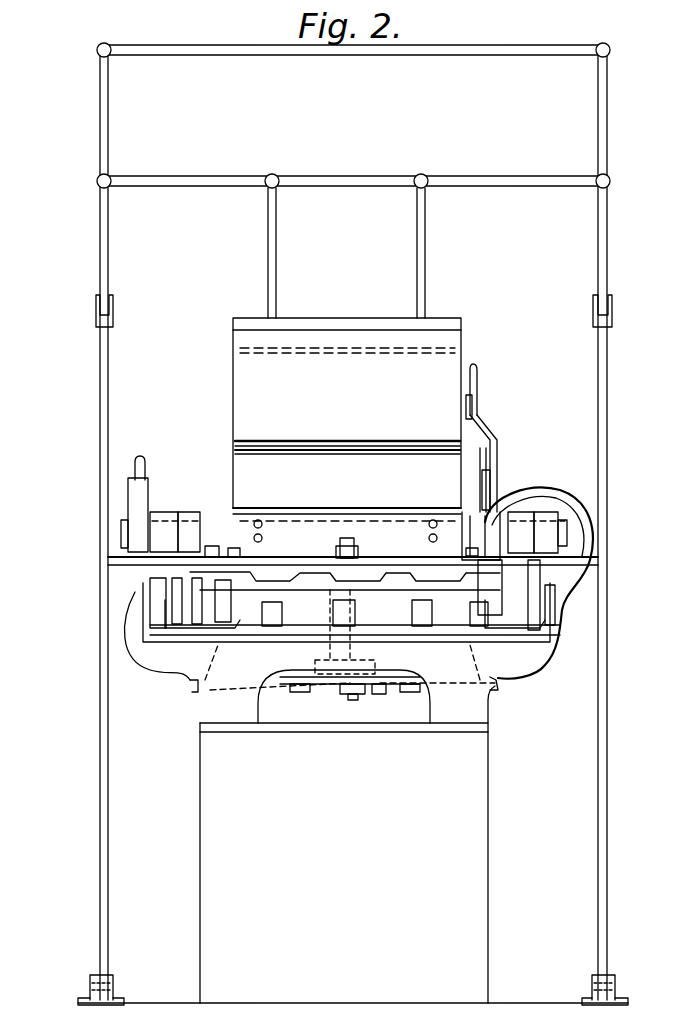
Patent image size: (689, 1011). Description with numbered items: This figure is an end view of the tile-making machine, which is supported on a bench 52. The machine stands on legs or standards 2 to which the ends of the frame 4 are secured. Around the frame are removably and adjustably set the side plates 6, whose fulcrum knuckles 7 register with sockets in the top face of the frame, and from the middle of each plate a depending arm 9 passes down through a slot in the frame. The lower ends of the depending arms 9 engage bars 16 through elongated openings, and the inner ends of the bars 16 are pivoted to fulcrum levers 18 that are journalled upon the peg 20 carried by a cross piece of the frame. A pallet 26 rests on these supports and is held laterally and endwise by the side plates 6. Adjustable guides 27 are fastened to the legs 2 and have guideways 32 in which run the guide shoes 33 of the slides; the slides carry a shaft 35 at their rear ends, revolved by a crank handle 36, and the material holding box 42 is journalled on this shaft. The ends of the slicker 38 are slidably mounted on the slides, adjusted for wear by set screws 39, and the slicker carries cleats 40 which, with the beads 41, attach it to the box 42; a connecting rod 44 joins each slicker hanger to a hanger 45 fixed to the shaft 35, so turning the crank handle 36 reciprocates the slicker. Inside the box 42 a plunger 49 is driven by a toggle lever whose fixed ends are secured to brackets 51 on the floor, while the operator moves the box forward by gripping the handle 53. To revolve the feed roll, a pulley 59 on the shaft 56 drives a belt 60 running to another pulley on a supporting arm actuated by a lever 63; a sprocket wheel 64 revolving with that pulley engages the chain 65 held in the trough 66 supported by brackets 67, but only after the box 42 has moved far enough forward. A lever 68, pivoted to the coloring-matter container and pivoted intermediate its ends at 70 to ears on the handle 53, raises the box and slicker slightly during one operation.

The leg or standard 2 is at (142, 660).
The frame 4 is at (306, 626).
The side plate 6 is at (250, 628).
The fulcrum knuckle 7 is at (262, 612).
The depending arm 9 is at (190, 688).
The bar 16 is at (298, 686).
The fulcrum lever 18 is at (385, 700).
The peg 20 is at (340, 678).
The pallet 26 is at (320, 580).
The adjustable guide 27 is at (190, 606).
The guideway 32 is at (172, 590).
The guide shoe 33 is at (200, 600).
The shaft 35 is at (121, 536).
The crank handle 36 is at (148, 492).
The slicker 38 is at (108, 565).
The set screw 39 is at (108, 557).
The cleat 40 is at (234, 560).
The bead 41 is at (240, 556).
The material holding box 42 is at (233, 429).
The connecting rod 44 is at (198, 512).
The hanger 45 is at (186, 512).
The plunger 49 is at (233, 356).
The bracket 51 is at (113, 988).
The bench 52 is at (476, 882).
The handle 53 is at (345, 535).
The shaft 56 is at (607, 354).
The pulley 59 is at (502, 458).
The belt 60 is at (478, 428).
The lever 63 is at (477, 376).
The sprocket wheel 64 is at (501, 422).
The chain 65 is at (492, 506).
The trough 66 is at (485, 536).
The bracket 67 is at (552, 495).
The lever 68 is at (350, 542).
The pivot 70 is at (358, 550).